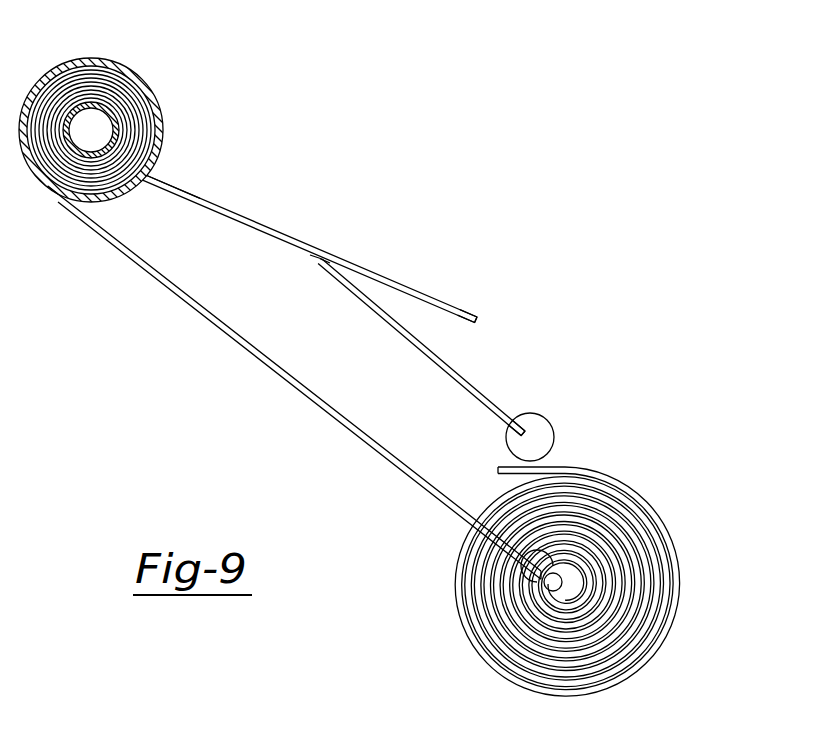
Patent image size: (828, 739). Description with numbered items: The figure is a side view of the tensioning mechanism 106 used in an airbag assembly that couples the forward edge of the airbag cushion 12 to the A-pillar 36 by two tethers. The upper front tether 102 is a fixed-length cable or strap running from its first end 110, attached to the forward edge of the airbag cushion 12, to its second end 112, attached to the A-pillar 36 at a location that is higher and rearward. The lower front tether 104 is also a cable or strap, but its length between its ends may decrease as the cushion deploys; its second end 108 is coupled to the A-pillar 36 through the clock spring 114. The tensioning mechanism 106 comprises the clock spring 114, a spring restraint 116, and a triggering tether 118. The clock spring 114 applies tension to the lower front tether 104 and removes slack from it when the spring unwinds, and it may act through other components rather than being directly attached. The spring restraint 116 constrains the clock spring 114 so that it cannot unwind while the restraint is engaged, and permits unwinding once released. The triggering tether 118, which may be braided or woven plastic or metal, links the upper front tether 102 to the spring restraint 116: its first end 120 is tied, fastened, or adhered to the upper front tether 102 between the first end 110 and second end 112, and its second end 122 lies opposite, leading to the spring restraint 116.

The airbag cushion 12 is at (87, 78).
The A-pillar 36 is at (163, 133).
The upper front tether 102 is at (287, 236).
The lower front tether 104 is at (270, 370).
The tensioning mechanism 106 is at (56, 192).
The second end of the lower front tether 108 is at (517, 593).
The first end of the upper front tether 110 is at (150, 180).
The second end of the upper front tether 112 is at (470, 318).
The clock spring 114 is at (672, 625).
The spring restraint 116 is at (543, 442).
The triggering tether 118 is at (490, 402).
The first end of the triggering tether 120 is at (330, 265).
The second end of the triggering tether 122 is at (509, 447).